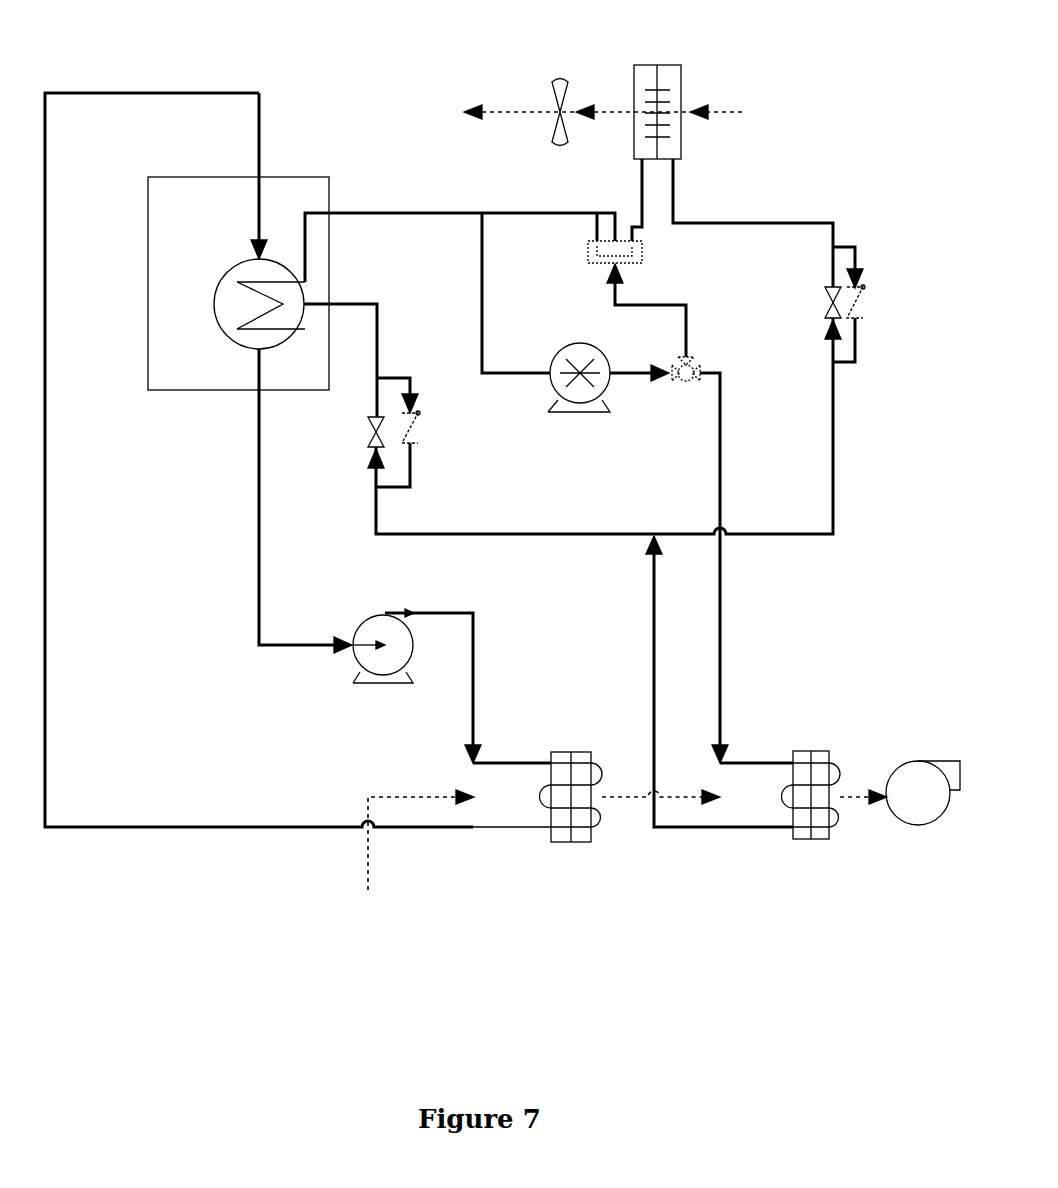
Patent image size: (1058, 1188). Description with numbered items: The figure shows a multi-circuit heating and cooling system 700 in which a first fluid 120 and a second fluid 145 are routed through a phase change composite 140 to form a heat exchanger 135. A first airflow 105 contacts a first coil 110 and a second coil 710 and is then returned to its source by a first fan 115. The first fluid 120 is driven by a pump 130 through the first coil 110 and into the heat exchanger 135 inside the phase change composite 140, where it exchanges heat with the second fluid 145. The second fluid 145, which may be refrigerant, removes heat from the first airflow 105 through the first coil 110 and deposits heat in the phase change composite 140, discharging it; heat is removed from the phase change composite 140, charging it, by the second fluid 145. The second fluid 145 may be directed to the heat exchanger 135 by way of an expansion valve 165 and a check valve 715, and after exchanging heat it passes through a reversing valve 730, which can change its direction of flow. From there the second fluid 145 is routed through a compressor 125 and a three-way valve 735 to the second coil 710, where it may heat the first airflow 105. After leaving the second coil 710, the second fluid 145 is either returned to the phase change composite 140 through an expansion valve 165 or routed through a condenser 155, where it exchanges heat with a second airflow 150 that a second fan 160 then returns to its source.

The multi-circuit heating and cooling system 700 is at (134, 885).
The first airflow 105 is at (421, 828).
The first coil 110 is at (630, 816).
The first fan 115 is at (923, 813).
The first fluid 120 is at (298, 479).
The compressor 125 is at (575, 328).
The pump 130 is at (452, 686).
The heat exchanger 135 is at (396, 433).
The phase change composite 140 is at (238, 241).
The second fluid 145 is at (746, 568).
The second airflow 150 is at (625, 115).
The condenser 155 is at (733, 160).
The second fan 160 is at (562, 97).
The expansion valve 165 is at (585, 410).
The second coil 710 is at (835, 816).
The check valve 715 is at (662, 345).
The reversing valve 730 is at (641, 211).
The three-way valve 735 is at (653, 340).